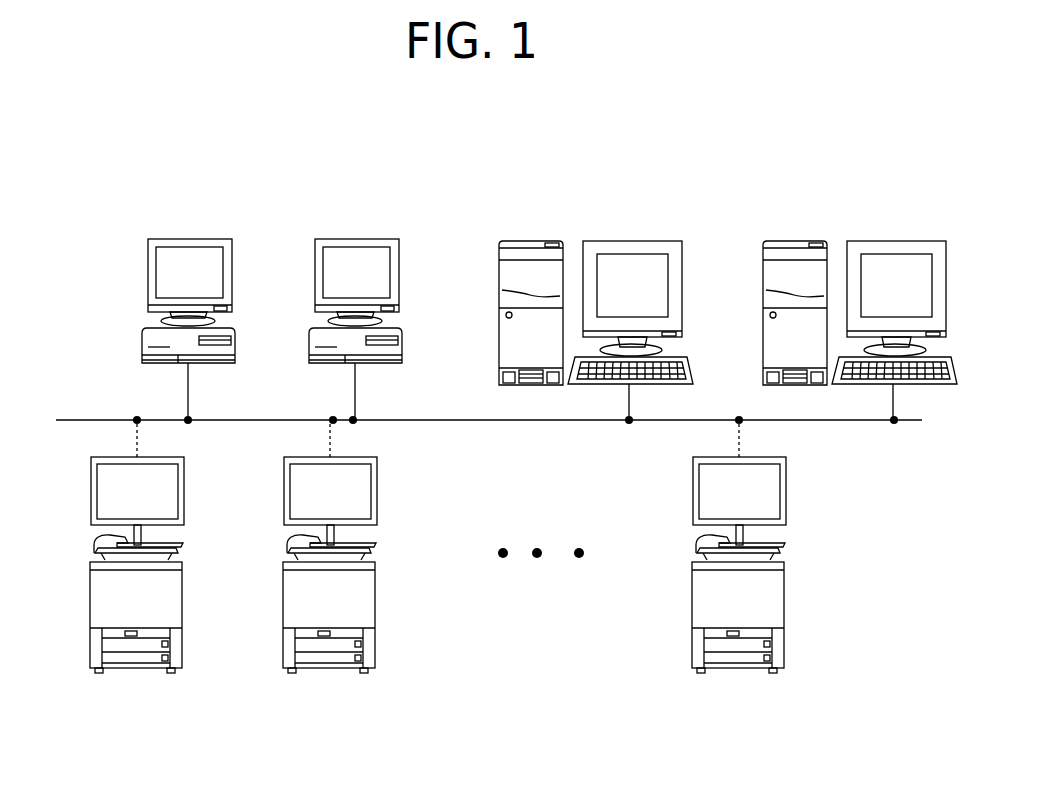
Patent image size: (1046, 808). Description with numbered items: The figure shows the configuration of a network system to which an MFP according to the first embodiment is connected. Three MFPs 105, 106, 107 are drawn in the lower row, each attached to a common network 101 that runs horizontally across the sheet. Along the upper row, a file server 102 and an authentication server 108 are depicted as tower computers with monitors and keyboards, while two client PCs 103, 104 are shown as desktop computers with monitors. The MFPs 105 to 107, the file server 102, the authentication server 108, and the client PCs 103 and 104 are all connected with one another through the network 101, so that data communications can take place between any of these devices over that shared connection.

The network 101 is at (70, 418).
The file server 102 is at (635, 240).
The client PC 103 is at (355, 238).
The client PC 104 is at (188, 238).
The MFP 105 is at (125, 675).
The MFP 106 is at (318, 675).
The MFP 107 is at (735, 677).
The authentication server 108 is at (895, 240).